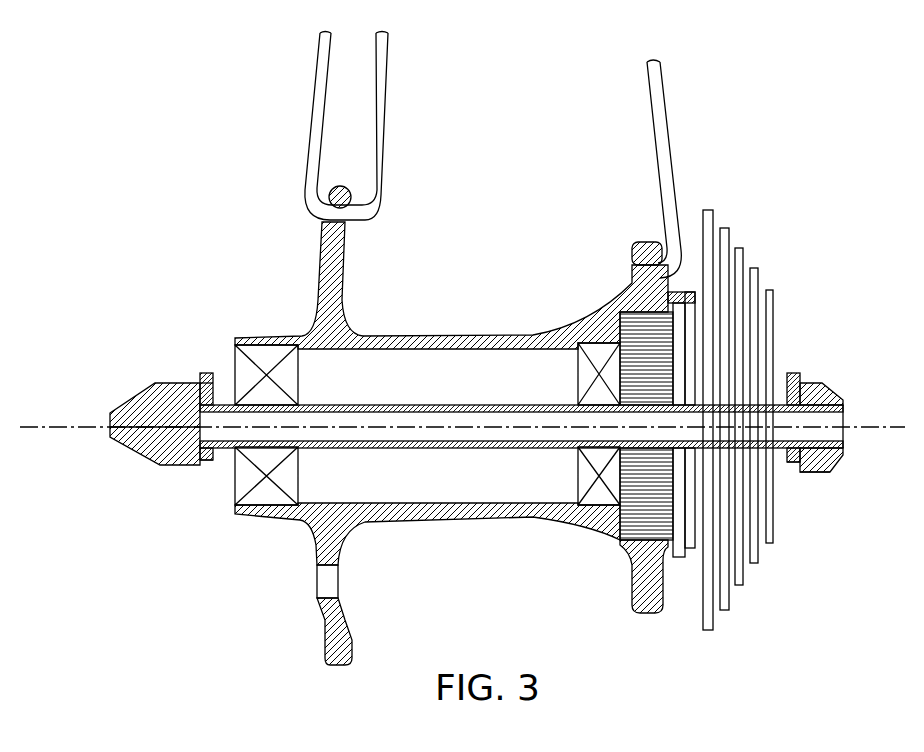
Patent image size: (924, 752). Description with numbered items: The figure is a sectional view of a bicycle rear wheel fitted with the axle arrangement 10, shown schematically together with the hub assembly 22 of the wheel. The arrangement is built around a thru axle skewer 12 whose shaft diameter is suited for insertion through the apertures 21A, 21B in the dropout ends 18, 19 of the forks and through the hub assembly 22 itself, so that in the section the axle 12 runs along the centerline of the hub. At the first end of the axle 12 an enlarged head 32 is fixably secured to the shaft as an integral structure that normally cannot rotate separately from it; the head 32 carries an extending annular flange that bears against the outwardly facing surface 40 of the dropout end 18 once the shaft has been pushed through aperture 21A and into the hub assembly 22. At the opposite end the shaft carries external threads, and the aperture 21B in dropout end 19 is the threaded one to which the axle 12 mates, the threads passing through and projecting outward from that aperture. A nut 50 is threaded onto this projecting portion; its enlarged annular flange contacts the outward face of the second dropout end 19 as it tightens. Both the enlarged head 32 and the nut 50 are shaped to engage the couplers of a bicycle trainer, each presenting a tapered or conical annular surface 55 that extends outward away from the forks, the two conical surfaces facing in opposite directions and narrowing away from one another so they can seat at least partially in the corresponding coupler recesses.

The axle arrangement 10 is at (847, 353).
The thru axle skewer 12 is at (388, 405).
The dropout end 18 is at (210, 470).
The dropout end 19 is at (790, 468).
The aperture 21A is at (210, 372).
The aperture 21B is at (808, 385).
The hub assembly 22 is at (290, 563).
The enlarged head 32 is at (165, 383).
The outwardly facing surface 40 is at (197, 375).
The nut 50 is at (812, 473).
The conical annular surface 55 is at (133, 397).